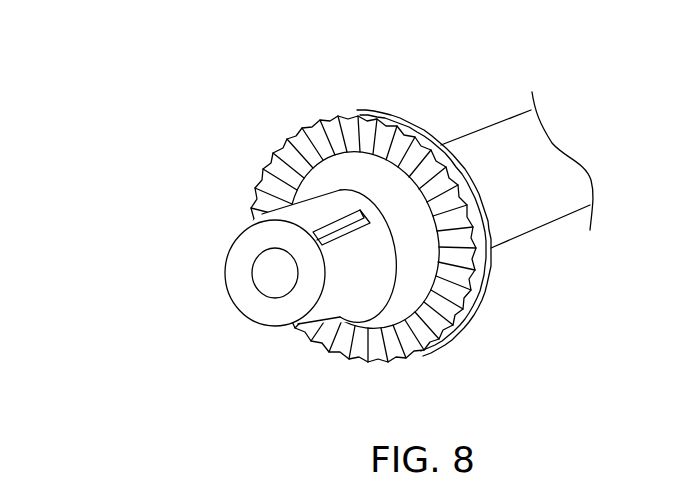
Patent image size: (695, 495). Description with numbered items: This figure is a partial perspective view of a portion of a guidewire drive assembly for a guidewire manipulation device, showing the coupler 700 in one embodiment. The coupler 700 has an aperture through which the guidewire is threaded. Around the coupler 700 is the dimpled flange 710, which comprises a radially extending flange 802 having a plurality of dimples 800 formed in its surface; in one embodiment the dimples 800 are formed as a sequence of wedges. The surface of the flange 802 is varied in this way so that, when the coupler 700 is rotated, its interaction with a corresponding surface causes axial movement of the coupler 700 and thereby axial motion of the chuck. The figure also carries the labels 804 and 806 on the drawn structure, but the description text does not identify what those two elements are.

The coupler 700 is at (138, 141).
The dimples 800 is at (286, 149).
The radially extending flange 802 is at (489, 298).
The shaft 804 is at (507, 140).
The hub 806 is at (264, 276).
The dimpled flange 710 is at (302, 345).